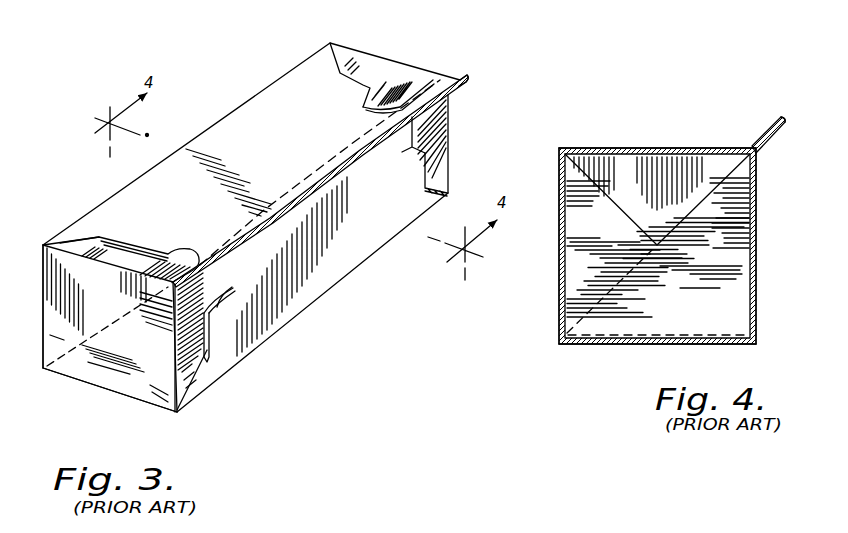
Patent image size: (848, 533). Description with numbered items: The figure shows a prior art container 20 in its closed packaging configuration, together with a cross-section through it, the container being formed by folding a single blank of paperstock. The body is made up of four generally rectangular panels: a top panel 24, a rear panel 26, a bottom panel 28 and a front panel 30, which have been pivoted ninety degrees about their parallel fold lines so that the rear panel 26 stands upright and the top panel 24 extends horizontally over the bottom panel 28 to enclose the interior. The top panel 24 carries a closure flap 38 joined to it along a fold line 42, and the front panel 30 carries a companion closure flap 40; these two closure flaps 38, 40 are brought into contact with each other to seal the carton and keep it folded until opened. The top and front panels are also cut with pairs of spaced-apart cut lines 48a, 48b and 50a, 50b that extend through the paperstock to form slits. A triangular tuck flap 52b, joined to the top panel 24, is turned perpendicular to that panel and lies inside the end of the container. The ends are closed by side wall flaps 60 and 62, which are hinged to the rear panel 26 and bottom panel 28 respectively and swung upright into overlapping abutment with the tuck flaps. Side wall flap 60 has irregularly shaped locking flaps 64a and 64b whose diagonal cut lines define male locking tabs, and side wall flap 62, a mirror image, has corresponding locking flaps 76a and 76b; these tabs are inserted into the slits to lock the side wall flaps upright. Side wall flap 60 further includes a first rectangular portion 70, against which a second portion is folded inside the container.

In FIG. 3, the container 20 is at (327, 310).
In FIG. 4, the container 20 is at (592, 356).
In FIG. 3, the top panel 24 is at (277, 145).
In FIG. 4, the top panel 24 is at (657, 148).
In FIG. 3, the rear panel 26 is at (42, 288).
In FIG. 4, the rear panel 26 is at (559, 300).
In FIG. 3, the bottom panel 28 is at (110, 390).
In FIG. 4, the bottom panel 28 is at (675, 345).
In FIG. 3, the front panel 30 is at (374, 225).
In FIG. 4, the front panel 30 is at (758, 270).
In FIG. 3, the closure flap 38 is at (335, 160).
In FIG. 4, the closure flap 38 is at (768, 132).
In FIG. 3, the closure flap 40 is at (462, 86).
In FIG. 4, the closure flap 40 is at (774, 136).
In FIG. 3, the fold line 42 is at (240, 217).
In FIG. 3, the cut line 48a is at (140, 243).
In FIG. 3, the cut line 48b is at (360, 82).
In FIG. 3, the cut line 50a is at (212, 333).
In FIG. 3, the cut line 50b is at (423, 162).
In FIG. 4, the tuck flap 52b is at (657, 199).
In FIG. 3, the side wall flap 60 is at (160, 372).
In FIG. 4, the side wall flap 62 is at (722, 308).
In FIG. 3, the locking flap 64a is at (193, 357).
In FIG. 3, the locking flap 64b is at (77, 240).
In FIG. 3, the first rectangular portion 70 is at (55, 340).
In FIG. 3, the locking flap 76a is at (440, 142).
In FIG. 3, the locking flap 76b is at (413, 78).